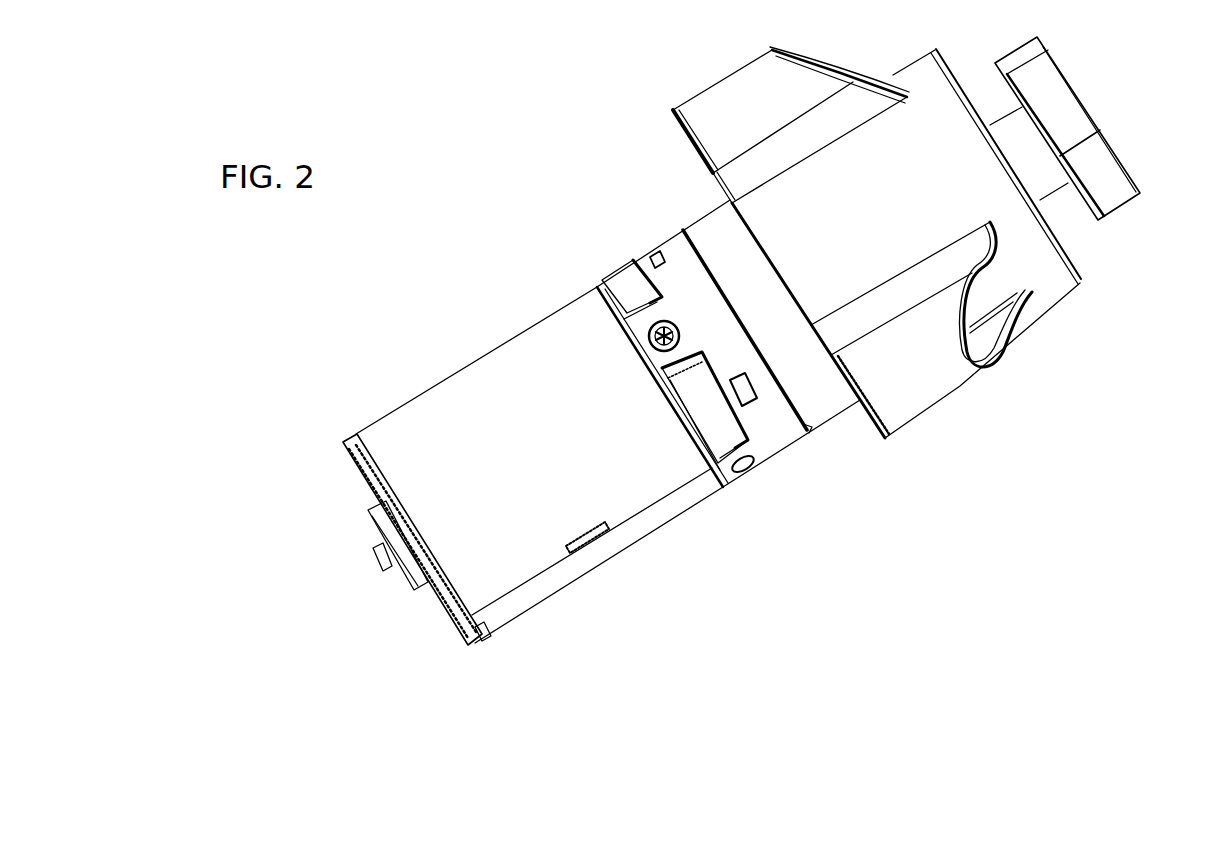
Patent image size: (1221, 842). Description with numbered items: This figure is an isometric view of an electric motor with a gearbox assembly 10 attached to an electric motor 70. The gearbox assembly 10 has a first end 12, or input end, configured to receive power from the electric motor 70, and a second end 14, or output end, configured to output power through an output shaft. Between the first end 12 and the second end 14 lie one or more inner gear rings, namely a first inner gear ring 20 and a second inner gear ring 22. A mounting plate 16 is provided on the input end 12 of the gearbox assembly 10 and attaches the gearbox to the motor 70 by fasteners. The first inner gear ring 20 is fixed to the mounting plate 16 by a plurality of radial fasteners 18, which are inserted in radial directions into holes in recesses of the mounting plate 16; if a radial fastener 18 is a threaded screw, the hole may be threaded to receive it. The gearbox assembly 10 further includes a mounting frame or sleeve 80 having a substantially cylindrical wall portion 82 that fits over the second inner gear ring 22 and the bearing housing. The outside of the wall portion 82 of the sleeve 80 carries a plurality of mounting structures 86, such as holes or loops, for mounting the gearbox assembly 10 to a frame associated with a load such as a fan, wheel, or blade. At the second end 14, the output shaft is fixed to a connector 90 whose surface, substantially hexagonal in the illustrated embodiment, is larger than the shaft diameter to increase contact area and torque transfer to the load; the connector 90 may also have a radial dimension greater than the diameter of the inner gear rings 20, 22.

The gearbox assembly 10 is at (769, 345).
The first end 12 is at (713, 380).
The second end 14 is at (1131, 162).
The mounting plate 16 is at (627, 292).
The radial fasteners 18 is at (655, 348).
The first inner gear ring 20 is at (770, 423).
The second inner gear ring 22 is at (828, 413).
The electric motor 70 is at (560, 492).
The sleeve 80 is at (872, 243).
The cylindrical wall portion 82 is at (901, 314).
The mounting structures 86 is at (992, 340).
The connector 90 is at (1061, 224).